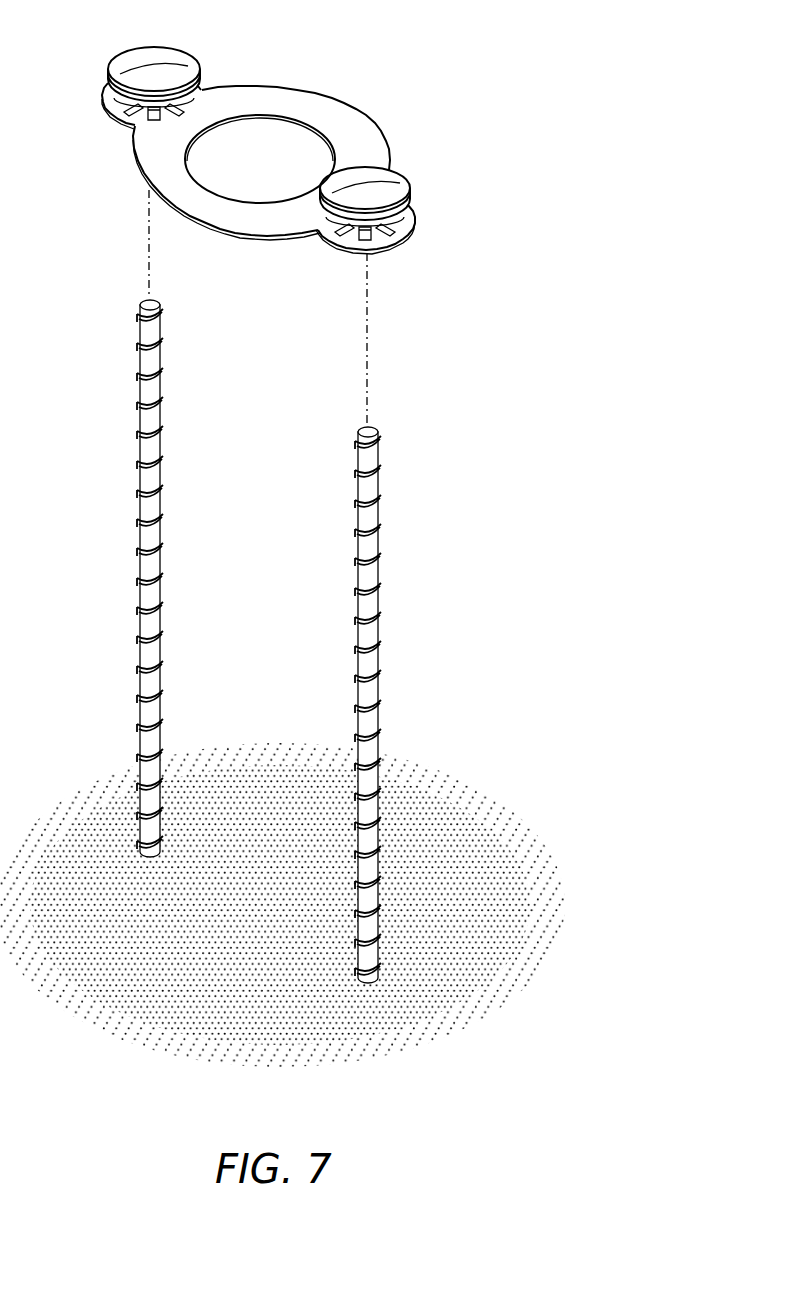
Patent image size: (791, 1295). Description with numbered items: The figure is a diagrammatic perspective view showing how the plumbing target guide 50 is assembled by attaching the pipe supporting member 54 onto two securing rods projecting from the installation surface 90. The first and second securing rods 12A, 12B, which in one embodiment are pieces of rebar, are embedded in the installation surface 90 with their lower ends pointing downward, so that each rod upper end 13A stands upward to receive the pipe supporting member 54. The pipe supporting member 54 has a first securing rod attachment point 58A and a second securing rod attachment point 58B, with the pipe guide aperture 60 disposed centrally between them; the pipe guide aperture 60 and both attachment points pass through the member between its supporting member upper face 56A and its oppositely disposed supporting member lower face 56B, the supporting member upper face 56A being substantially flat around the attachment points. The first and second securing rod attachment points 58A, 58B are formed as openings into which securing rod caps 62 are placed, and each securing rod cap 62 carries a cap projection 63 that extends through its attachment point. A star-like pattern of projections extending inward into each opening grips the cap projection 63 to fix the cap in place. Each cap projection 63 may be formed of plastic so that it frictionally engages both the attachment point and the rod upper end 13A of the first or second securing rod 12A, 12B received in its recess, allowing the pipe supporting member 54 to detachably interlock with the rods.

The first securing rod 12A is at (148, 444).
The second securing rod 12B is at (372, 546).
The rod upper end 13A is at (147, 300).
The plumbing target guide 50 is at (257, 150).
The pipe supporting member 54 is at (248, 160).
The supporting member upper face 56A is at (235, 102).
The supporting member lower face 56B is at (241, 241).
The first securing rod attachment point 58A is at (116, 119).
The second securing rod attachment point 58B is at (396, 230).
The pipe guide aperture 60 is at (272, 118).
The securing rod cap 62 is at (160, 57).
The cap projection 63 is at (119, 132).
The installation surface 90 is at (440, 920).